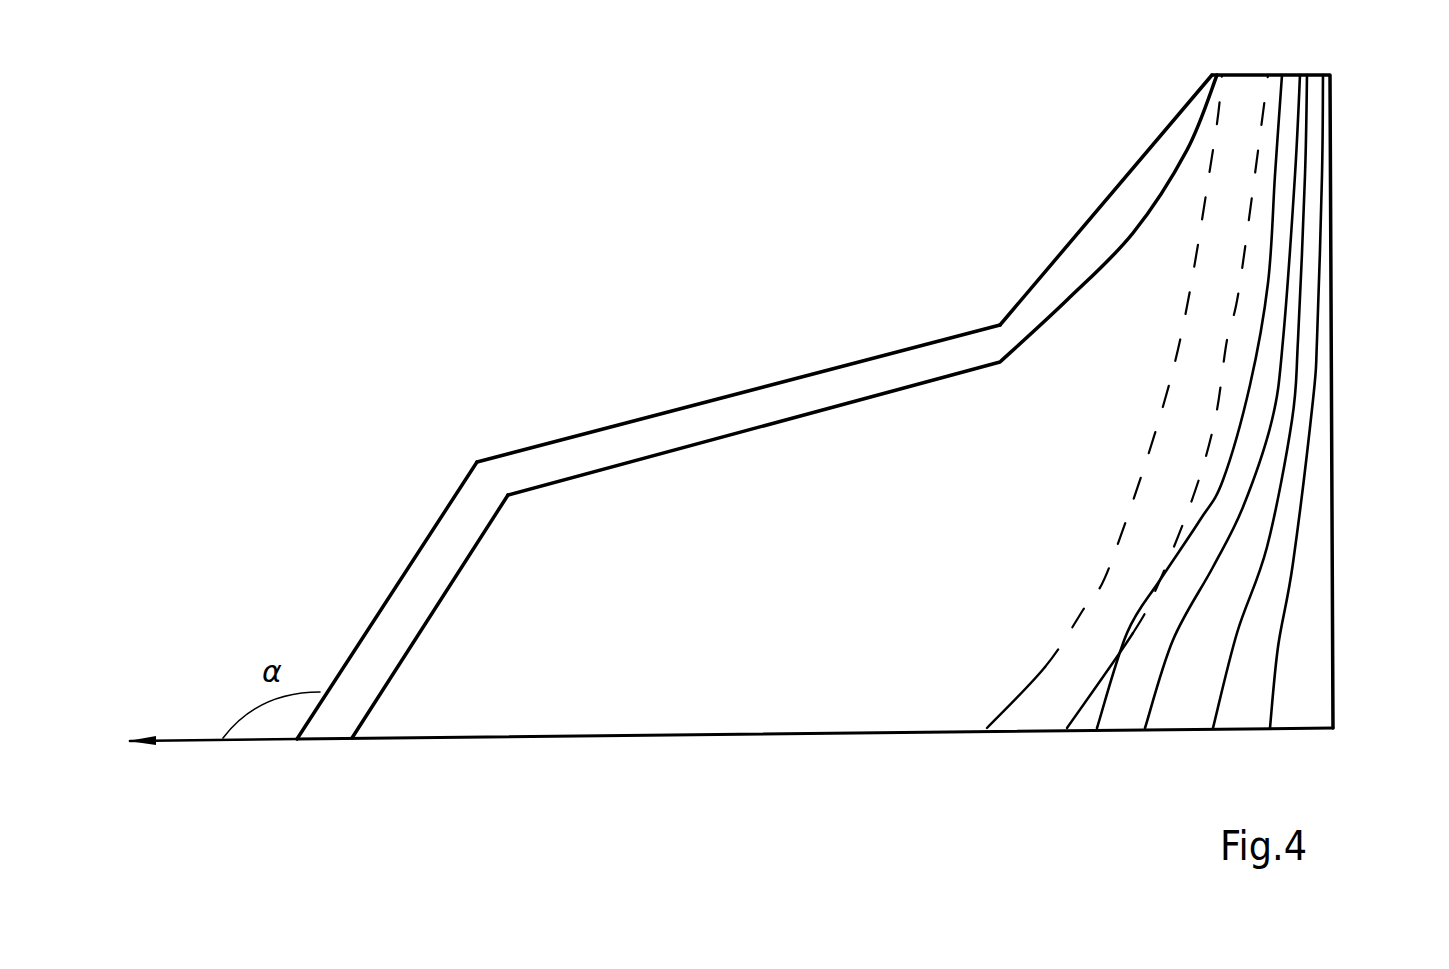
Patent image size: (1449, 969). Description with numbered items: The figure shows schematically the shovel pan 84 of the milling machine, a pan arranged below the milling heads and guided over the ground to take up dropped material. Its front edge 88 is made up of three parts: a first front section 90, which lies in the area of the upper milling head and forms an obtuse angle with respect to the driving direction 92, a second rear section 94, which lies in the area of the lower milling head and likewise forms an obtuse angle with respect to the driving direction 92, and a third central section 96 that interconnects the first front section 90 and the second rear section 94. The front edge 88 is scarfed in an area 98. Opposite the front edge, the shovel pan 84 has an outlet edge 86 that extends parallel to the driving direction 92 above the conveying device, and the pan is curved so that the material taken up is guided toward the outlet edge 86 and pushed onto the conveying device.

The shovel pan 84 is at (1075, 488).
The outlet edge 86 is at (680, 733).
The front edge 88 is at (757, 407).
The first front section 90 is at (412, 558).
The driving direction 92 is at (212, 789).
The second rear section 94 is at (1083, 228).
The third central section 96 is at (795, 377).
The scarfed area 98 is at (563, 453).